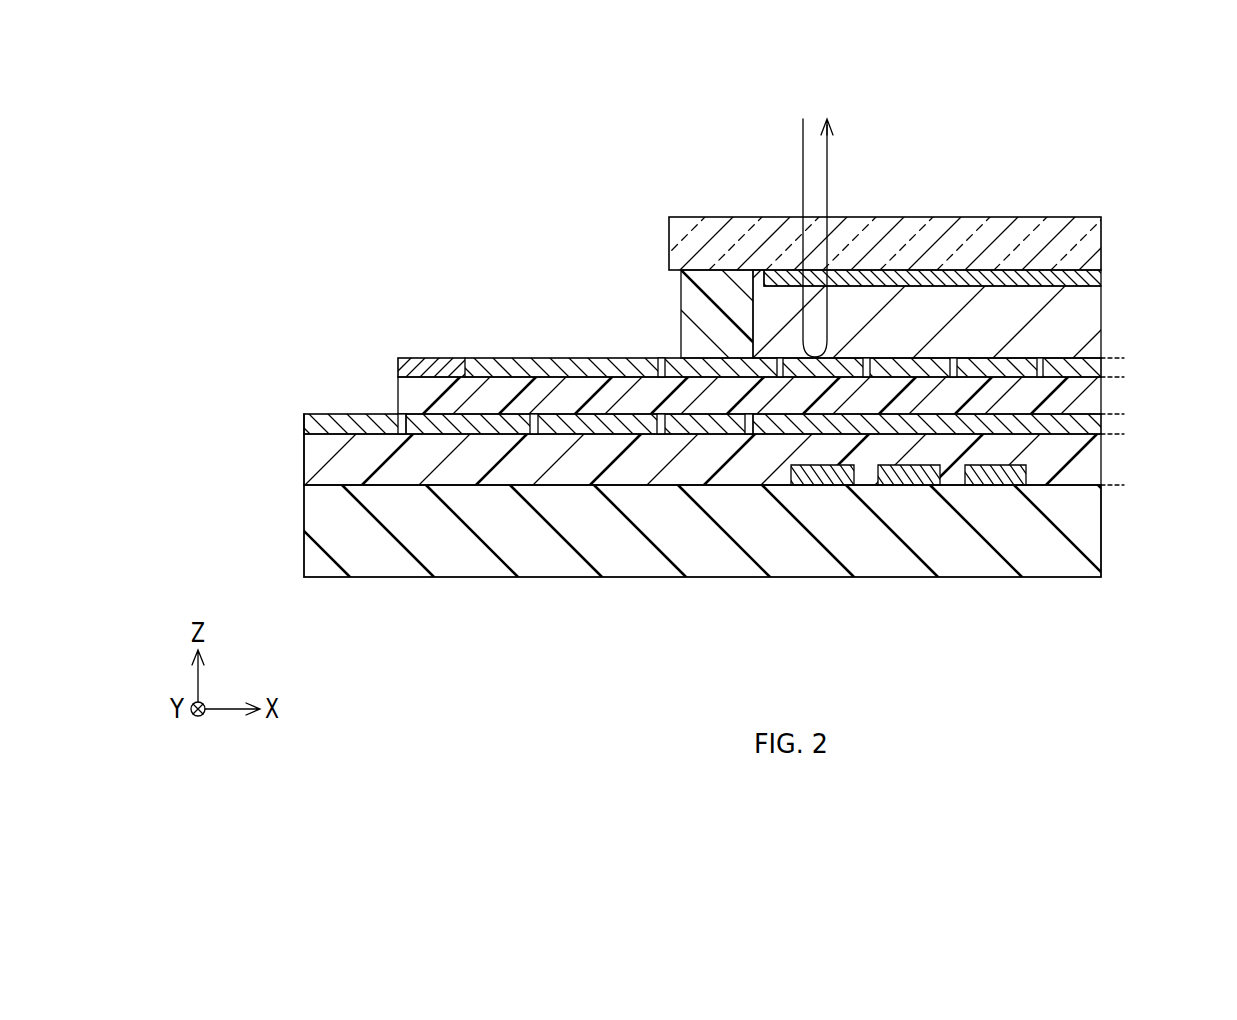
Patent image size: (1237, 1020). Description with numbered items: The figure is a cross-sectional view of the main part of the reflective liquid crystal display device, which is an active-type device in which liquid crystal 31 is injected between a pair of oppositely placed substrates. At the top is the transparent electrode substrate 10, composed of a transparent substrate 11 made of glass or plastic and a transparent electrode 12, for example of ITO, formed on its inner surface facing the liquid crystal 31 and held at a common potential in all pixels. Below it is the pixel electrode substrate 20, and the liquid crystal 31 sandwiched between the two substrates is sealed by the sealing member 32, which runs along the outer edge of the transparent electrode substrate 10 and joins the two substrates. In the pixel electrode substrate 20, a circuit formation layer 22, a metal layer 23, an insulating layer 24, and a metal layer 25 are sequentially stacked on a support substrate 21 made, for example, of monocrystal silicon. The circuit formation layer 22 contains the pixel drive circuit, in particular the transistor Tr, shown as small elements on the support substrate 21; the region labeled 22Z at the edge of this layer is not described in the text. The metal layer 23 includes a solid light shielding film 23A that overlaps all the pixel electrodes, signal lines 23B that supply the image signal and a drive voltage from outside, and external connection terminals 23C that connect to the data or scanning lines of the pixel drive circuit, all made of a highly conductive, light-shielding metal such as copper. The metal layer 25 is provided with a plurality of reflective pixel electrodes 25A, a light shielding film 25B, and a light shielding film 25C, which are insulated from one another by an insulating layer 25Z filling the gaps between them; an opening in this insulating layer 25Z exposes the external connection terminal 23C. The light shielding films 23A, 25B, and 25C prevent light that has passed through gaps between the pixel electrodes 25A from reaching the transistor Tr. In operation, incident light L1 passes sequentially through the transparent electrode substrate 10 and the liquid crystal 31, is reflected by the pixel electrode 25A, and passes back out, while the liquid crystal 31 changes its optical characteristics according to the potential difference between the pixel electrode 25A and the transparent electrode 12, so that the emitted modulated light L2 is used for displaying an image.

The transparent electrode substrate 10 is at (933, 163).
The transparent substrate 11 is at (946, 232).
The transparent electrode 12 is at (1075, 276).
The incident light L1 is at (803, 163).
The modulated light L2 is at (827, 195).
The sealing member 32 is at (693, 315).
The liquid crystal 31 is at (1070, 327).
The pixel electrode substrate 20 is at (1165, 302).
The metal layer 25 is at (1118, 358).
The pixel electrode 25A is at (812, 372).
The light shielding film 25B is at (587, 372).
The light shielding film 25C is at (735, 372).
The insulating layer 25Z is at (663, 378).
The insulating layer 24 is at (1077, 395).
The metal layer 23 is at (1118, 414).
The light shielding film 23A is at (1028, 426).
The signal line 23B is at (497, 426).
The external connection terminal 23C is at (362, 426).
The circuit formation layer 22 is at (1118, 434).
The edge portion 22Z is at (318, 452).
The transistor Tr is at (860, 486).
The support substrate 21 is at (1078, 528).